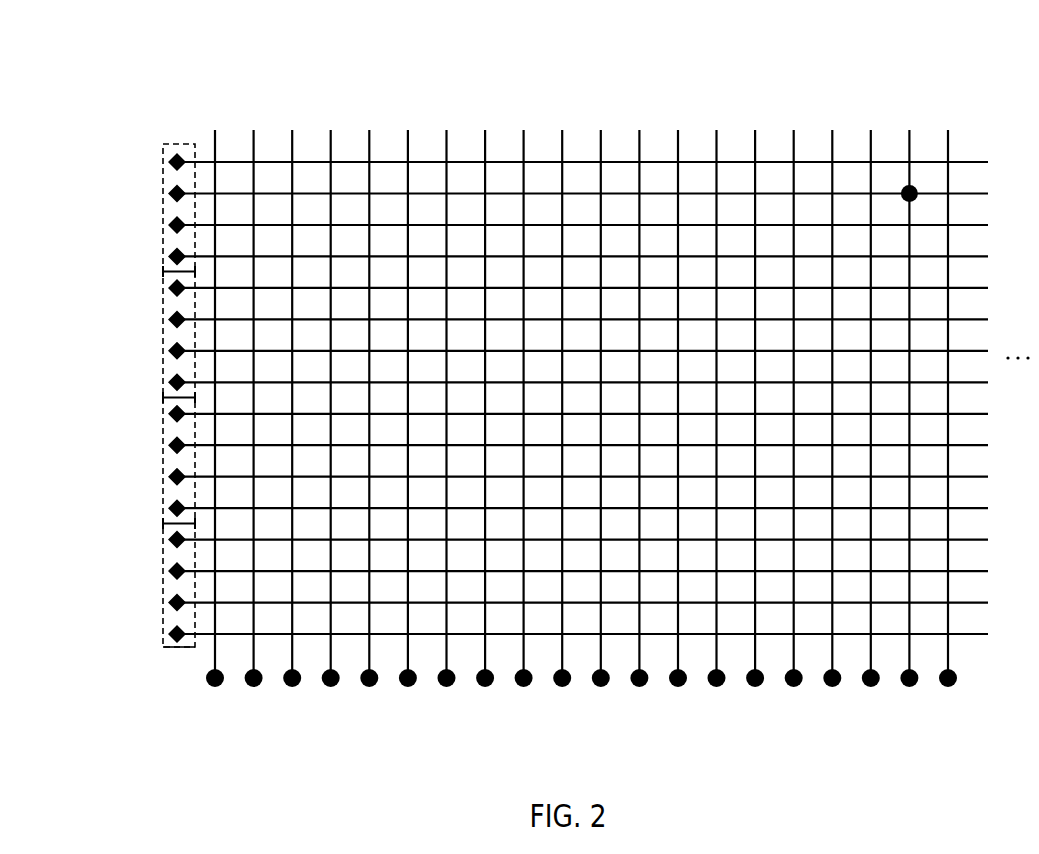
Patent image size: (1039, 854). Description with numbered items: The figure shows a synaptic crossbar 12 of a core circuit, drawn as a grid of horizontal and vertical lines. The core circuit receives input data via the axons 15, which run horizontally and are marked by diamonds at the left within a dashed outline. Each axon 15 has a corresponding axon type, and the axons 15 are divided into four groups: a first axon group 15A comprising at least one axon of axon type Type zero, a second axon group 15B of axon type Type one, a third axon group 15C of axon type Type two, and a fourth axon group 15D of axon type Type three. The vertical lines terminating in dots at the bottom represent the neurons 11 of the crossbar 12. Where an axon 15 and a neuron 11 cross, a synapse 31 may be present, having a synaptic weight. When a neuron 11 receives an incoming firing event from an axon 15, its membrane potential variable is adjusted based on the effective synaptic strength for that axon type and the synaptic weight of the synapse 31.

The synaptic crossbar 12 is at (550, 39).
The neuron 11 is at (215, 688).
The axon 15 is at (163, 162).
The first axon group 15A is at (163, 256).
The second axon group 15B is at (163, 382).
The third axon group 15C is at (163, 508).
The fourth axon group 15D is at (163, 634).
The synapse 31 is at (914, 186).